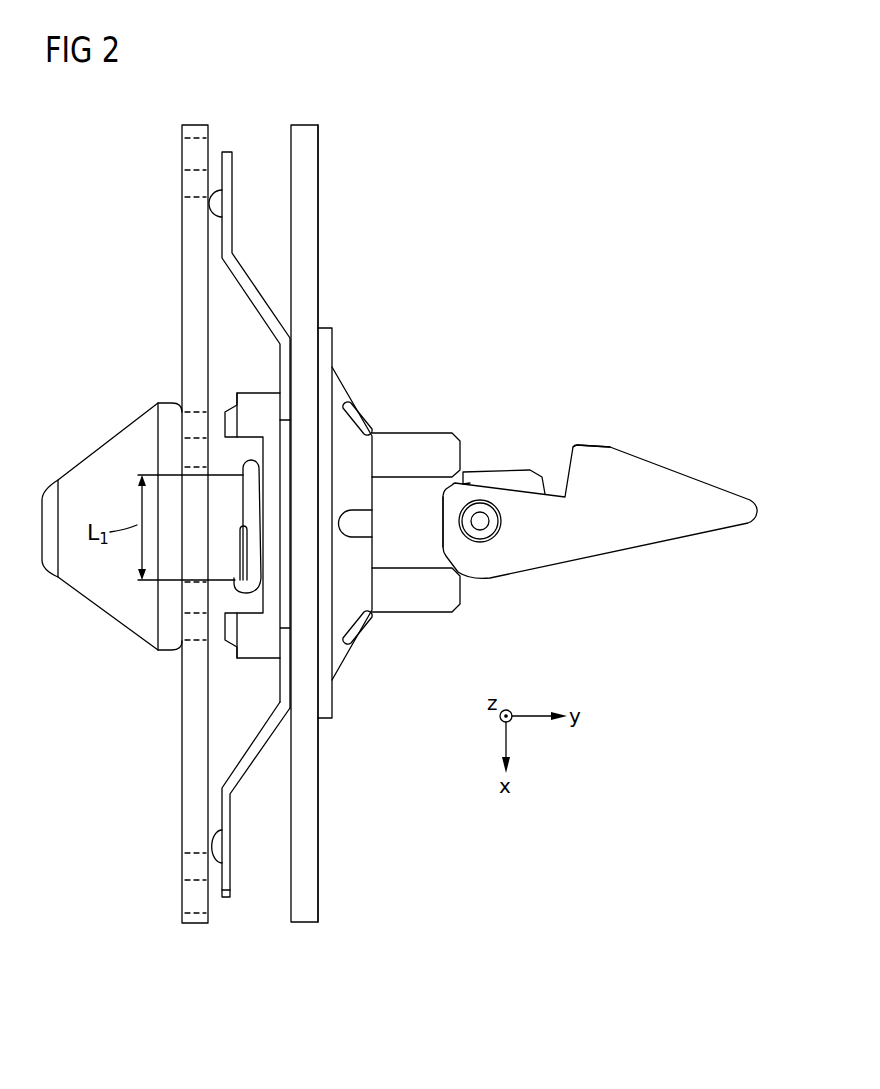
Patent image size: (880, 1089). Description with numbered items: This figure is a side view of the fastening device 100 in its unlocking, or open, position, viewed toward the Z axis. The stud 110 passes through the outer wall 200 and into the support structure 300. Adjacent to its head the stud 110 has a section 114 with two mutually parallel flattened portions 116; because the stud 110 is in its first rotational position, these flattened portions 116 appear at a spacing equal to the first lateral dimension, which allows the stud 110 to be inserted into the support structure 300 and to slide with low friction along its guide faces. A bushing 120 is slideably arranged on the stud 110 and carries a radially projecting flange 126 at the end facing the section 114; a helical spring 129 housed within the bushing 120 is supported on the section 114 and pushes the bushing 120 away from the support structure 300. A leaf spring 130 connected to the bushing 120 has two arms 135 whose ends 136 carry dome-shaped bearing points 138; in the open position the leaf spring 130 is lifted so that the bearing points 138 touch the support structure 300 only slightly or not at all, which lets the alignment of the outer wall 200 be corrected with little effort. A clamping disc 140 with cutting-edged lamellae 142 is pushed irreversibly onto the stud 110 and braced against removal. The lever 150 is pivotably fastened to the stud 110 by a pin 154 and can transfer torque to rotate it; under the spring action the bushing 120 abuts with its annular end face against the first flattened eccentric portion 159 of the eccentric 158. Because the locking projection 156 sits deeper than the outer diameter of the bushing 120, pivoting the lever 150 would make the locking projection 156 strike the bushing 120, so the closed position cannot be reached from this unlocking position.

The fastening device 100 is at (505, 216).
The stud 110 is at (520, 473).
The section 114 is at (220, 557).
The flattened portions 116 is at (222, 473).
The bushing 120 is at (430, 440).
The flange 126 is at (272, 458).
The helical spring 129 is at (250, 456).
The leaf spring 130 is at (246, 261).
The arms 135 is at (272, 727).
The ends 136 is at (225, 898).
The bearing point 138 is at (223, 843).
The clamping disc 140 is at (327, 703).
The lamellae 142 is at (363, 580).
The lever 150 is at (675, 490).
The pin 154 is at (481, 521).
The locking projection 156 is at (568, 447).
The eccentrics 158 is at (479, 478).
The first flattened eccentric portion 159 is at (443, 527).
The outer wall 200 is at (305, 150).
The support structure 300 is at (195, 768).